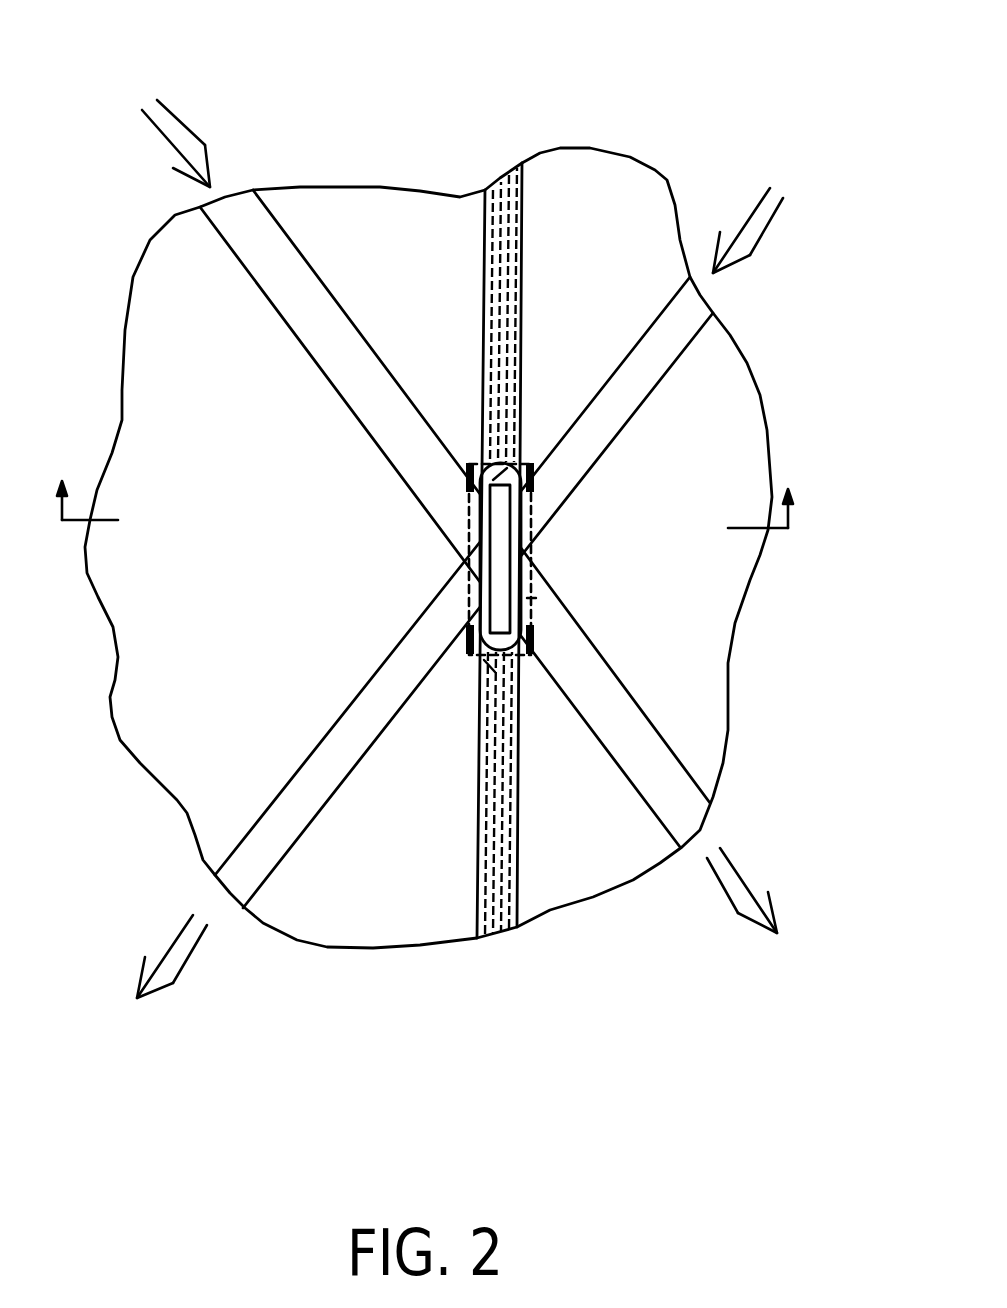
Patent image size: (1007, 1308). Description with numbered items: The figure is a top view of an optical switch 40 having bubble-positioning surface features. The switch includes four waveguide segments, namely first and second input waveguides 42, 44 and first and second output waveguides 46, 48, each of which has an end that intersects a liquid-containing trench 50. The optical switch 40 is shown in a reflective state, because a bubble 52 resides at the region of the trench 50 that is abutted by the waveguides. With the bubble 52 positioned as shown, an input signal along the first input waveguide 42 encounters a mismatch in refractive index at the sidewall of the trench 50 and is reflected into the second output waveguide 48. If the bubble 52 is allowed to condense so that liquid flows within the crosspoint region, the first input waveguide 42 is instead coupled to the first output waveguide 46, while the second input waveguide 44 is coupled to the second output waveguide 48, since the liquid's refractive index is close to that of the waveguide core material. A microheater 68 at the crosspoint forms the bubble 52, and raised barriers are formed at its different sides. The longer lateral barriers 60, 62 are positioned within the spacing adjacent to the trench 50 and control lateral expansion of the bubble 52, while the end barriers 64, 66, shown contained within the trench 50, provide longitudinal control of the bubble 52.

The optical switch 40 is at (690, 35).
The first input waveguide 42 is at (333, 325).
The second input waveguide 44 is at (640, 383).
The first output waveguide 46 is at (620, 763).
The second output waveguide 48 is at (302, 782).
The liquid-containing trench 50 is at (525, 202).
The bubble 52 is at (530, 463).
The lateral barrier 60 is at (470, 547).
The lateral barrier 62 is at (536, 598).
The end barrier 64 is at (482, 470).
The end barrier 66 is at (490, 673).
The microheater 68 is at (502, 513).